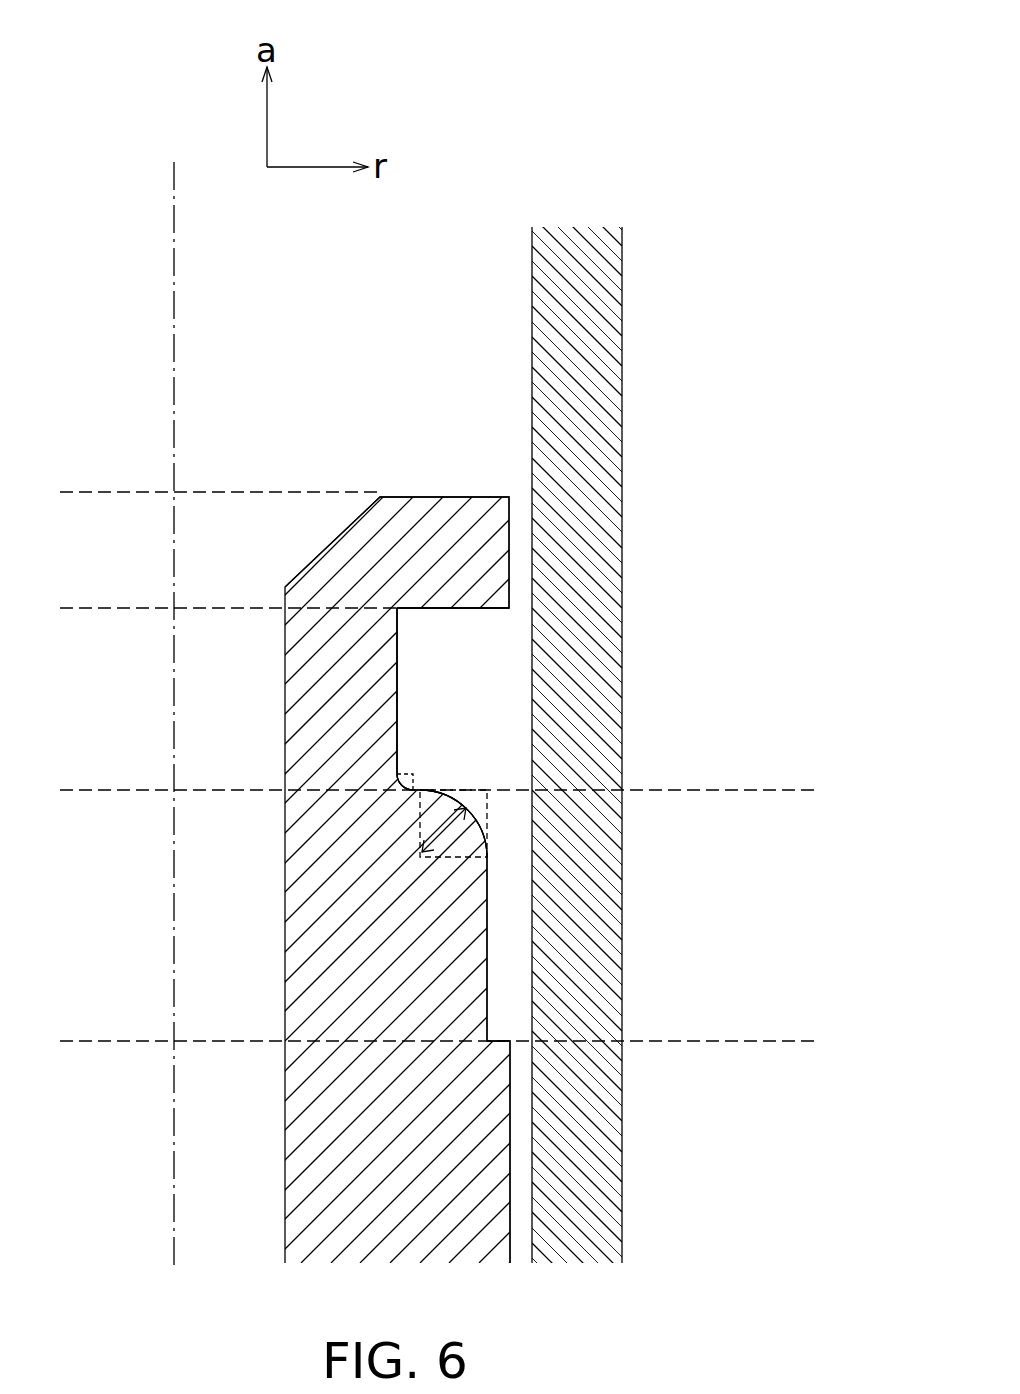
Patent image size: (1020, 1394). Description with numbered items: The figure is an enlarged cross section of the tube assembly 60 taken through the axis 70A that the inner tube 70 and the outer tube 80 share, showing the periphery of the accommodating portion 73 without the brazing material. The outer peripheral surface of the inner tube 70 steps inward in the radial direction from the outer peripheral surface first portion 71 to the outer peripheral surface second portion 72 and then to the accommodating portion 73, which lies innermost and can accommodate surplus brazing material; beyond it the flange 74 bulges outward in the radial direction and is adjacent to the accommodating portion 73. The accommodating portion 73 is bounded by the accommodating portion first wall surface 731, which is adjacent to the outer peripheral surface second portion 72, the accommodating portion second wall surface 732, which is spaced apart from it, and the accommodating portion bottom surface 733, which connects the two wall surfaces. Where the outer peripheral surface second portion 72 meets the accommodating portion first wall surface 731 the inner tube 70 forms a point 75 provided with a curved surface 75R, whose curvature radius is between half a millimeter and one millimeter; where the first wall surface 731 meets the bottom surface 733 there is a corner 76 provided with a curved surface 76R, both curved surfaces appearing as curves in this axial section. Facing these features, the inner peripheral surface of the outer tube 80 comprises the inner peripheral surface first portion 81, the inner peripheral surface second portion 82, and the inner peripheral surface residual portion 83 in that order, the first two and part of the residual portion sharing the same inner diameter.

The tube assembly 60 is at (677, 90).
The inner tube 70 is at (362, 450).
The axis 70A is at (178, 686).
The outer peripheral surface first portion 71 is at (520, 1196).
The outer peripheral surface second portion 72 is at (492, 958).
The accommodating portion 73 is at (148, 622).
The accommodating portion first wall surface 731 is at (420, 788).
The accommodating portion second wall surface 732 is at (452, 612).
The accommodating portion bottom surface 733 is at (412, 680).
The flange 74 is at (443, 497).
The point 75 is at (468, 747).
The curved surface 75R is at (497, 790).
The corner 76 is at (413, 728).
The curved surface 76R is at (403, 783).
The outer tube 80 is at (580, 213).
The inner peripheral surface first portion 81 is at (545, 1147).
The inner peripheral surface second portion 82 is at (545, 895).
The inner peripheral surface residual portion 83 is at (545, 372).